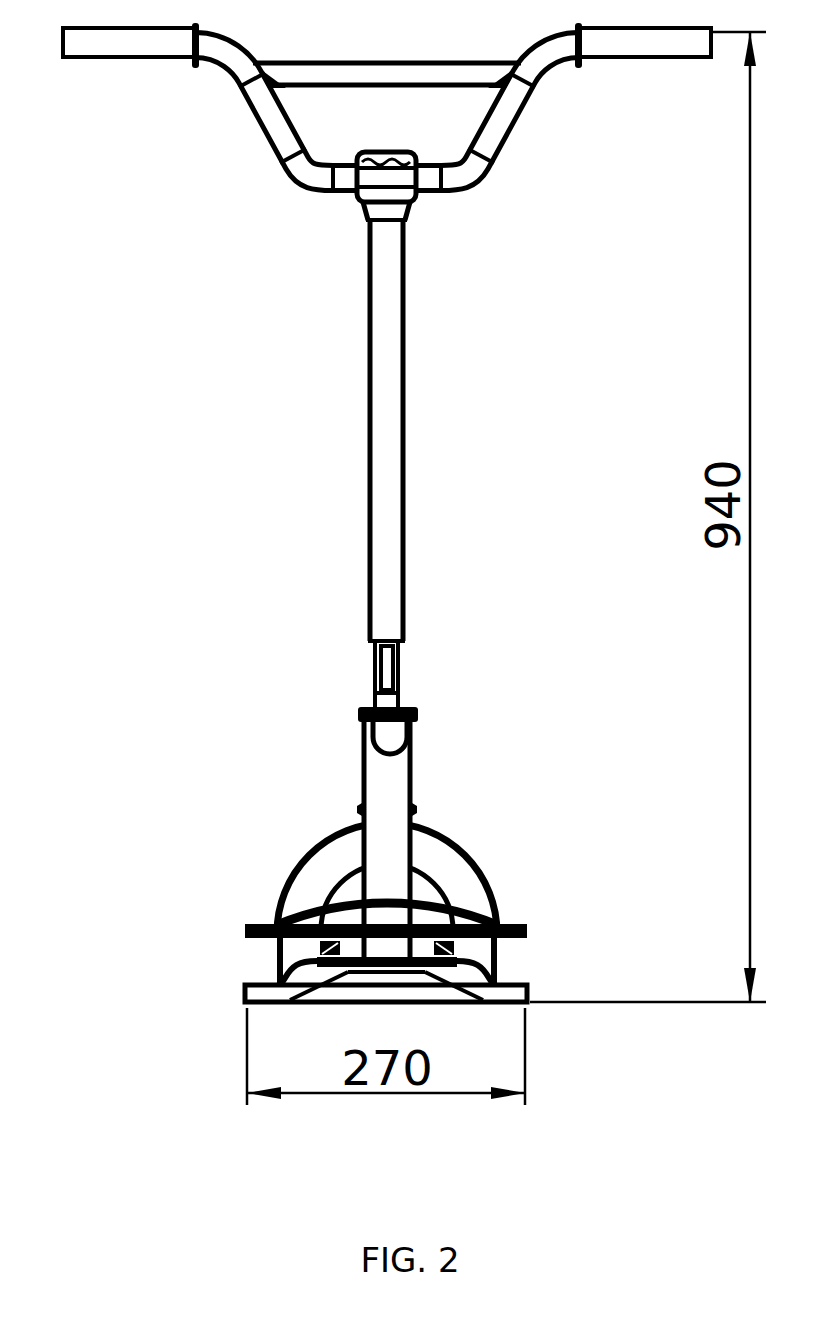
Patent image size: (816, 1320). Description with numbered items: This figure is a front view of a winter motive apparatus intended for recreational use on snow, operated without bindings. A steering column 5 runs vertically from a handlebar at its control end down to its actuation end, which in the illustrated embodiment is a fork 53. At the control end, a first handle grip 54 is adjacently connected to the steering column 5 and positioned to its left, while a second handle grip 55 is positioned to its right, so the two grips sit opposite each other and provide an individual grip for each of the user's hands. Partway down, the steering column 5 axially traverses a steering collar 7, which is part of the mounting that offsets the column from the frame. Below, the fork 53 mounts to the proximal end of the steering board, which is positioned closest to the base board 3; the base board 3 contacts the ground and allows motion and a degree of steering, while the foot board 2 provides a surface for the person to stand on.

The foot board 2 is at (355, 930).
The base board 3 is at (377, 985).
The steering column 5 is at (385, 468).
The steering collar 7 is at (378, 667).
The fork 53 is at (317, 867).
The first handle grip 54 is at (95, 46).
The second handle grip 55 is at (680, 49).